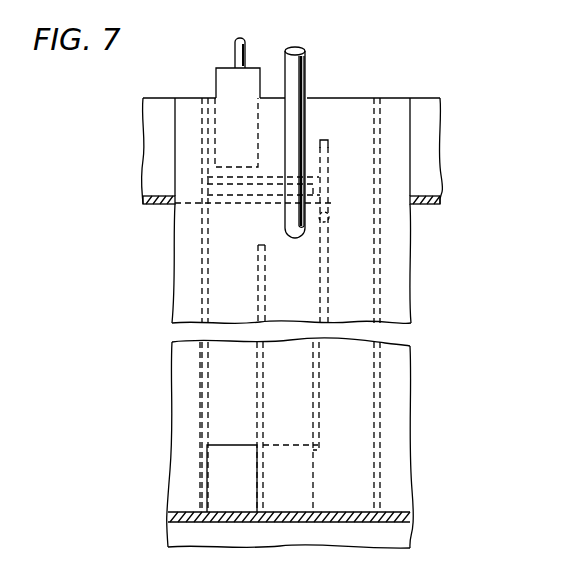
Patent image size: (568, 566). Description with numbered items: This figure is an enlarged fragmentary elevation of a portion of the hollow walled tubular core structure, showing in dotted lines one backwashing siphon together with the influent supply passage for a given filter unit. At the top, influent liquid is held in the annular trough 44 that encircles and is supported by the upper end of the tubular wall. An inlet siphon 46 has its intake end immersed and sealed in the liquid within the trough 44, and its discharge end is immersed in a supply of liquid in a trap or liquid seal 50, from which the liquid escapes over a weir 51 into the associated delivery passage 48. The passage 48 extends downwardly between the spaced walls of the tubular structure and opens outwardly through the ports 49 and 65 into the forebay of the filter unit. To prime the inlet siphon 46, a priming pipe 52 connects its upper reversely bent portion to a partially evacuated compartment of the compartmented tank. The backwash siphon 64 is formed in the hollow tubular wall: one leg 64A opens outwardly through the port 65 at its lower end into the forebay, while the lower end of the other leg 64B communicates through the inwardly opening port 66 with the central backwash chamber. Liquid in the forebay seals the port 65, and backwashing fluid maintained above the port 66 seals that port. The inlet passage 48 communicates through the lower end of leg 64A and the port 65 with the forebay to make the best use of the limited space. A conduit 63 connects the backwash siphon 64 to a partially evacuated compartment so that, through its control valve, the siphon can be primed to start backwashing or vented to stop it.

The annular trough 44 is at (432, 147).
The inlet siphon 46 is at (216, 86).
The delivery passage 48 is at (356, 287).
The port 49 is at (318, 451).
The trap or liquid seal 50 is at (270, 118).
The weir 51 is at (330, 141).
The priming pipe 52 is at (236, 50).
The conduit 63 is at (307, 80).
The backwash siphon 64 is at (222, 380).
The siphon leg 64A is at (298, 300).
The siphon leg 64B is at (240, 300).
The port 65 is at (300, 445).
The inwardly opening port 66 is at (217, 481).